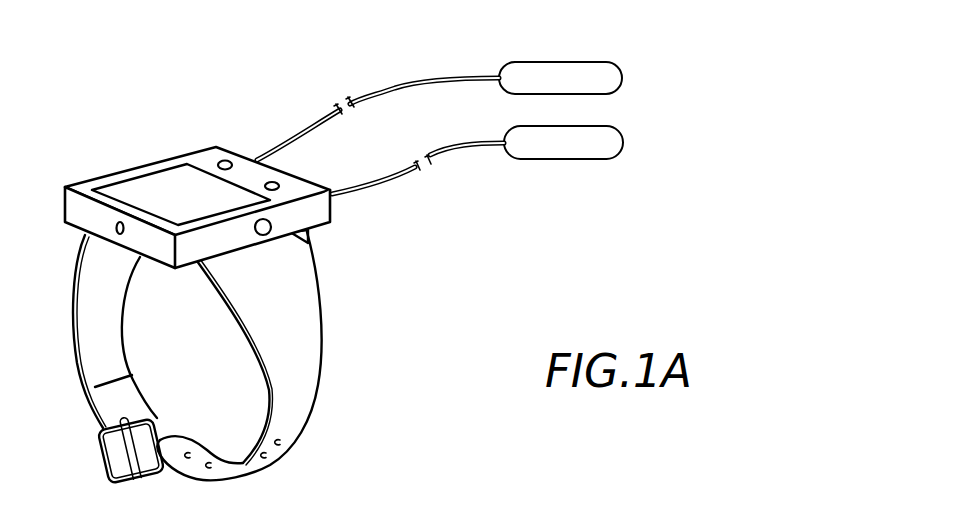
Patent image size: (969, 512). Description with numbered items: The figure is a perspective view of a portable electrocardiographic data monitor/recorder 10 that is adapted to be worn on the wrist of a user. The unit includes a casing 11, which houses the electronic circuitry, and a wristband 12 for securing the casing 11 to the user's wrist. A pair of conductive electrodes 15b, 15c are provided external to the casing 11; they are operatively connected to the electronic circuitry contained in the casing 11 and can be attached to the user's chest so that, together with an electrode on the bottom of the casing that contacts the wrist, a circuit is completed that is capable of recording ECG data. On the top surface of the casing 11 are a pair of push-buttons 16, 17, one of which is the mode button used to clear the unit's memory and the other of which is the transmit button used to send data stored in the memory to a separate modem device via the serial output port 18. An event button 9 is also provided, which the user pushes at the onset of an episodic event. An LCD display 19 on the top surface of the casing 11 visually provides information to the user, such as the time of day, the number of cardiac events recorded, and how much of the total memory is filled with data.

The event button 9 is at (277, 233).
The portable electrocardiographic data monitor/recorder 10 is at (323, 145).
The casing 11 is at (332, 203).
The wristband 12 is at (323, 320).
The conductive electrode 15b is at (563, 62).
The conductive electrode 15c is at (577, 160).
The push-button 16 is at (235, 157).
The push-button 17 is at (282, 181).
The serial output port 18 is at (113, 233).
The LCD display 19 is at (138, 182).